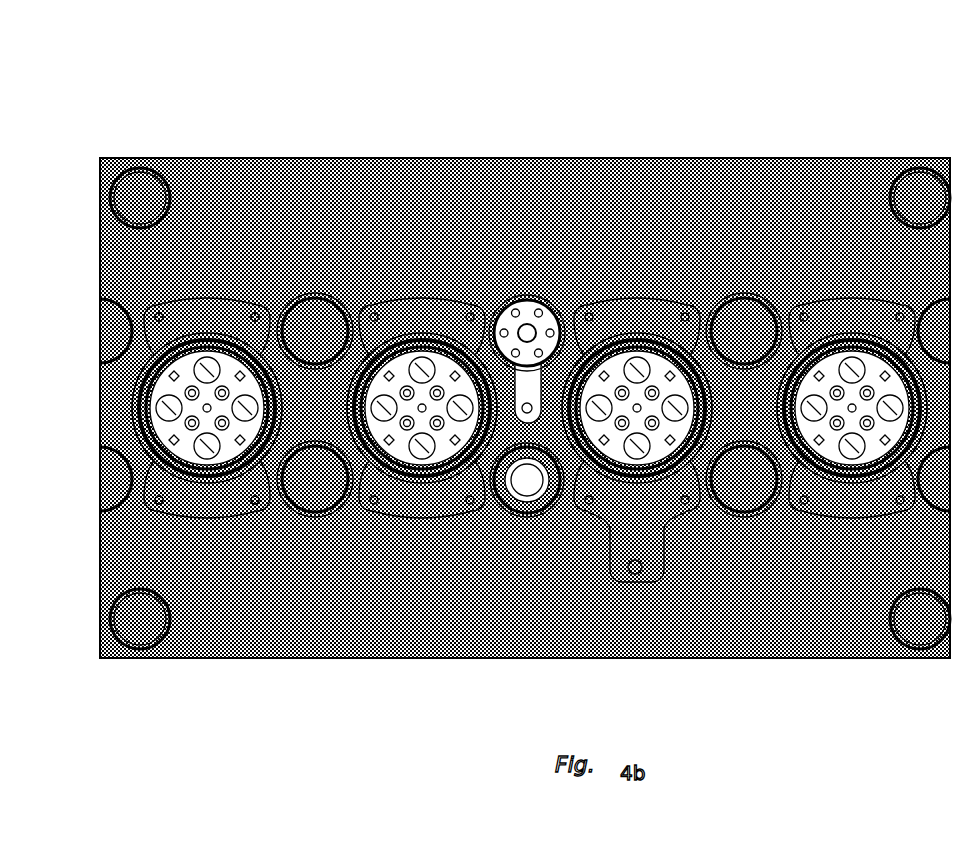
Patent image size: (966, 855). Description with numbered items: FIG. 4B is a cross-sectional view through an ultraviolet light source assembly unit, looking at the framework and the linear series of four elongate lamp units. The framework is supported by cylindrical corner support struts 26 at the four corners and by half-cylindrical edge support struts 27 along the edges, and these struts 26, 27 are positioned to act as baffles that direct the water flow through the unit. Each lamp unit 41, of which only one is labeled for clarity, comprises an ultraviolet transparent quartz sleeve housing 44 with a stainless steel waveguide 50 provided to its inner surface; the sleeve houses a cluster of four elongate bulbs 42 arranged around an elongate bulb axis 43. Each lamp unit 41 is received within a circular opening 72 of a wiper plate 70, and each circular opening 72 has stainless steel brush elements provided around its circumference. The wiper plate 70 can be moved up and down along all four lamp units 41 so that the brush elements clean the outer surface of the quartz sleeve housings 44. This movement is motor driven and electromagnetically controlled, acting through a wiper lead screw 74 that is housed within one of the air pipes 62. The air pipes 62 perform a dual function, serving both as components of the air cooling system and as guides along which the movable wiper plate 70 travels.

The cylindrical corner support strut 26 is at (100, 657).
The half-cylindrical edge support strut 27 is at (100, 335).
The lamp unit 41 is at (195, 323).
The elongate bulb 42 is at (133, 415).
The elongate bulb axis 43 is at (135, 452).
The ultraviolet transparent quartz sleeve housing 44 is at (230, 342).
The stainless steel waveguide 50 is at (414, 322).
The air pipe 62 is at (556, 300).
The wiper plate 70 is at (543, 302).
The circular opening 72 is at (432, 314).
The wiper lead screw 74 is at (563, 307).